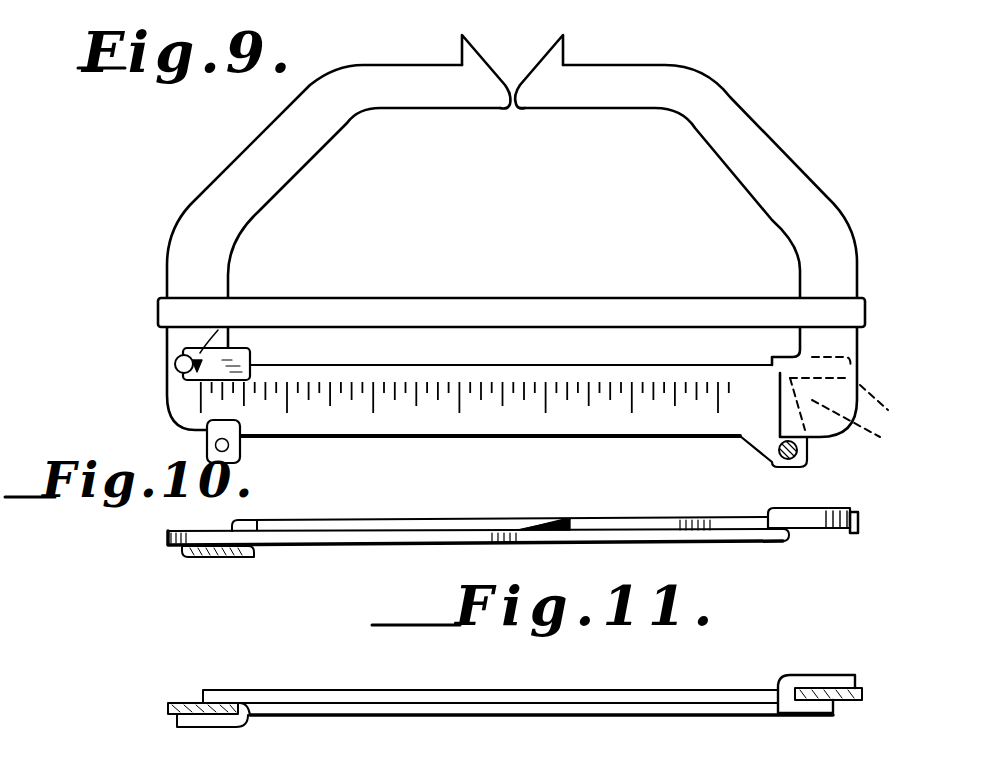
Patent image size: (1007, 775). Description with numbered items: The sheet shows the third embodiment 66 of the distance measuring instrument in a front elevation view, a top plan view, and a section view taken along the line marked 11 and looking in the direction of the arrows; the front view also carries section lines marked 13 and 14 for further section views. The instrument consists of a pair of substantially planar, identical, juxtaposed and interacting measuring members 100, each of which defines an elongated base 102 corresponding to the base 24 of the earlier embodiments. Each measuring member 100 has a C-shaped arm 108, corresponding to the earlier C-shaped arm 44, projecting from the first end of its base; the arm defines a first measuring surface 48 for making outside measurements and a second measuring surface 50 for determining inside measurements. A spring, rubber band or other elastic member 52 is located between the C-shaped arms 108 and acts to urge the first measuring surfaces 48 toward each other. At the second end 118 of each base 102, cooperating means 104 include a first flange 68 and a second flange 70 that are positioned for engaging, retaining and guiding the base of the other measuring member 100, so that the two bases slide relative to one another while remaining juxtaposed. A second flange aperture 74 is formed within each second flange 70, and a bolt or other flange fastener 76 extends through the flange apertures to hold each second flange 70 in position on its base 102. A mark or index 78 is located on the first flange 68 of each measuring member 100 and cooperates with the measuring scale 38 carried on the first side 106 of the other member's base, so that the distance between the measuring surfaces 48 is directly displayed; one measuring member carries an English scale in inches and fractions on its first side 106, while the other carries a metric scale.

In FIG. 9, the section line 11- 11 is at (120, 275).
In FIG. 9, the section line 13- 13 is at (607, 20).
In FIG. 9, the section line 14- 14 is at (263, 335).
In FIG. 10, the elongated base 24 is at (348, 521).
In FIG. 9, the measuring scale 38 is at (634, 410).
In FIG. 10, the C-shaped arm 44 is at (390, 545).
In FIG. 9, the first measuring surface 48 is at (520, 100).
In FIG. 10, the first measuring surface 48 is at (560, 512).
In FIG. 9, the second measuring surface 50 is at (462, 48).
In FIG. 10, the second measuring surface 50 is at (457, 540).
In FIG. 9, the elastic member 52 is at (652, 280).
In FIG. 9, the third embodiment 66 is at (800, 133).
In FIG. 9, the first flange 68 is at (180, 375).
In FIG. 10, the first flange 68 is at (240, 557).
In FIG. 11, the first flange 68 is at (820, 675).
In FIG. 9, the second flange 70 is at (234, 463).
In FIG. 9, the second flange aperture 74 is at (183, 373).
In FIG. 9, the flange fastener 76 is at (240, 448).
In FIG. 9, the index 78 is at (228, 350).
In FIG. 9, the measuring member 100 is at (197, 208).
In FIG. 9, the base 102 is at (563, 430).
In FIG. 11, the base 102 is at (405, 718).
In FIG. 9, the cooperating means 104 is at (192, 352).
In FIG. 9, the first side 106 is at (357, 427).
In FIG. 11, the first side 106 is at (317, 690).
In FIG. 9, the C-shaped arm 108 is at (264, 152).
In FIG. 11, the C-shaped arm 108 is at (170, 706).
In FIG. 9, the second end 118 is at (914, 449).